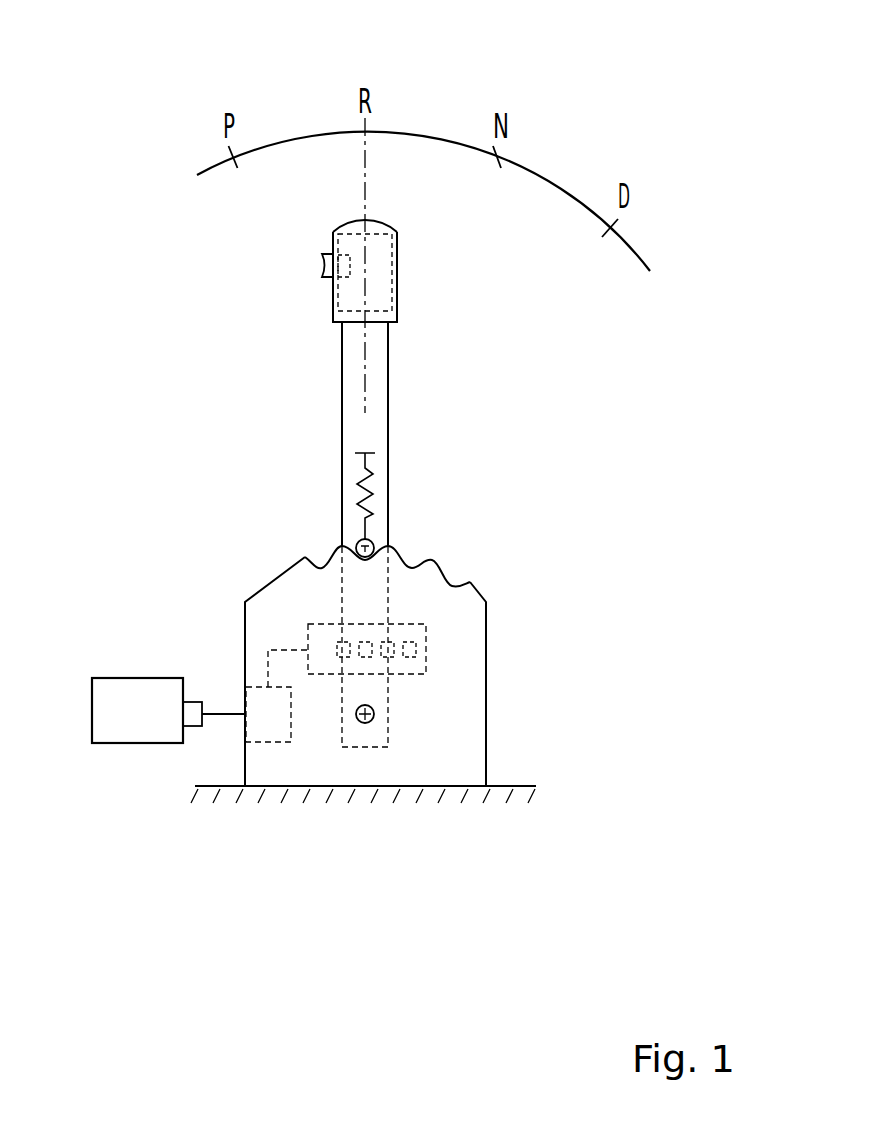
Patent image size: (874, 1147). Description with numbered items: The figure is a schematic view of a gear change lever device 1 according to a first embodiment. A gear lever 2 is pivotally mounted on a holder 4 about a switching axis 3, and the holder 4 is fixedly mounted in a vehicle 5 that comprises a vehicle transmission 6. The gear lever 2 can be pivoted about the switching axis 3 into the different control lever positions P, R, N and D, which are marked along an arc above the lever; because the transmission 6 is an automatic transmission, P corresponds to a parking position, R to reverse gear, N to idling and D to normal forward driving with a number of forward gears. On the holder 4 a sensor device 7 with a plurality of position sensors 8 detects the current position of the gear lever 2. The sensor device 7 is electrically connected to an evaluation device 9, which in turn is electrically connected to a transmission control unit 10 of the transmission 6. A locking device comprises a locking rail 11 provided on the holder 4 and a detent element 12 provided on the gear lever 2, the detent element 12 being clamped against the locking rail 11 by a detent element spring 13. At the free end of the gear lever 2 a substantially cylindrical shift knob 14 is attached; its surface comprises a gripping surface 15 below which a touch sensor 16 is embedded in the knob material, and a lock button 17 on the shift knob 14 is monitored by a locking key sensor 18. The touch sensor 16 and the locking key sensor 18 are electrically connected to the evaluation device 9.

The gear change lever device 1 is at (157, 90).
The gear lever 2 is at (388, 402).
The switching axis 3 is at (372, 722).
The holder 4 is at (487, 693).
The vehicle 5 is at (507, 785).
The vehicle transmission 6 is at (107, 690).
The sensor device 7 is at (426, 632).
The position sensors 8 is at (337, 652).
The evaluation device 9 is at (258, 728).
The transmission control unit 10 is at (192, 690).
The locking rail 11 is at (446, 572).
The detent element 12 is at (356, 540).
The detent element spring 13 is at (367, 487).
The shift knob 14 is at (384, 222).
The gripping surface 15 is at (397, 302).
The touch sensor 16 is at (397, 268).
The lock button 17 is at (322, 267).
The locking key sensor 18 is at (345, 258).